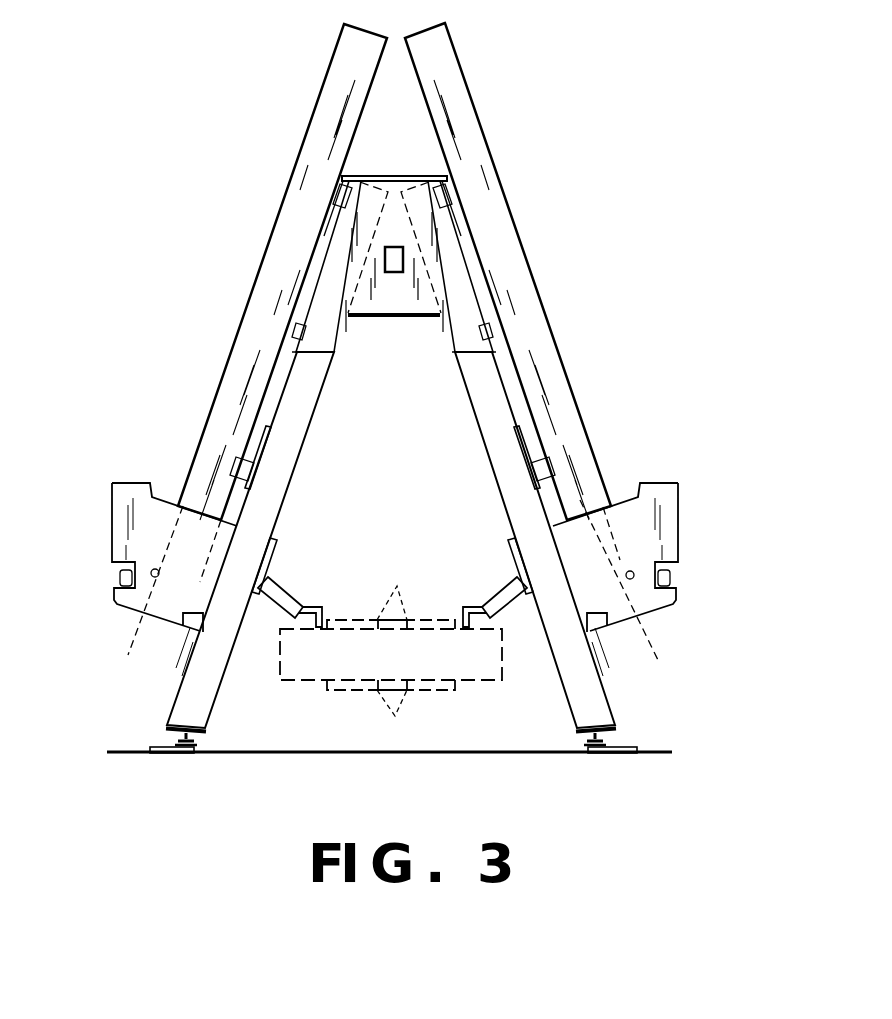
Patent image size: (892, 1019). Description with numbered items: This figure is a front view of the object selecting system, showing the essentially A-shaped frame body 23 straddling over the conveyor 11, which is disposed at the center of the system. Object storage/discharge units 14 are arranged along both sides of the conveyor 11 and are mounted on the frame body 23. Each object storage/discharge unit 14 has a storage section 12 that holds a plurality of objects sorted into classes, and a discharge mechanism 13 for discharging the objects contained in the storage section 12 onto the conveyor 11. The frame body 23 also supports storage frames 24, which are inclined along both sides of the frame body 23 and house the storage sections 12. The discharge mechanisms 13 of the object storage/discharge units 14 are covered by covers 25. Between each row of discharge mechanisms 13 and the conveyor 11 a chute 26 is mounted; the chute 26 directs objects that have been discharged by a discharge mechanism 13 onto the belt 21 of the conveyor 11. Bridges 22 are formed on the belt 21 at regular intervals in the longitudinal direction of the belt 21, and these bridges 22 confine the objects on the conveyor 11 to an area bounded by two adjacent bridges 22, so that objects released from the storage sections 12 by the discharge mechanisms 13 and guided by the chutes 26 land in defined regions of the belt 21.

The conveyor 11 is at (502, 690).
The storage section 12 is at (268, 218).
The discharge mechanism 13 is at (400, 593).
The object storage/discharge unit 14 is at (98, 522).
The belt 21 is at (478, 682).
The bridge 22 is at (395, 650).
The frame body 23 is at (487, 396).
The storage frame 24 is at (275, 286).
The cover 25 is at (134, 497).
The chute 26 is at (293, 596).